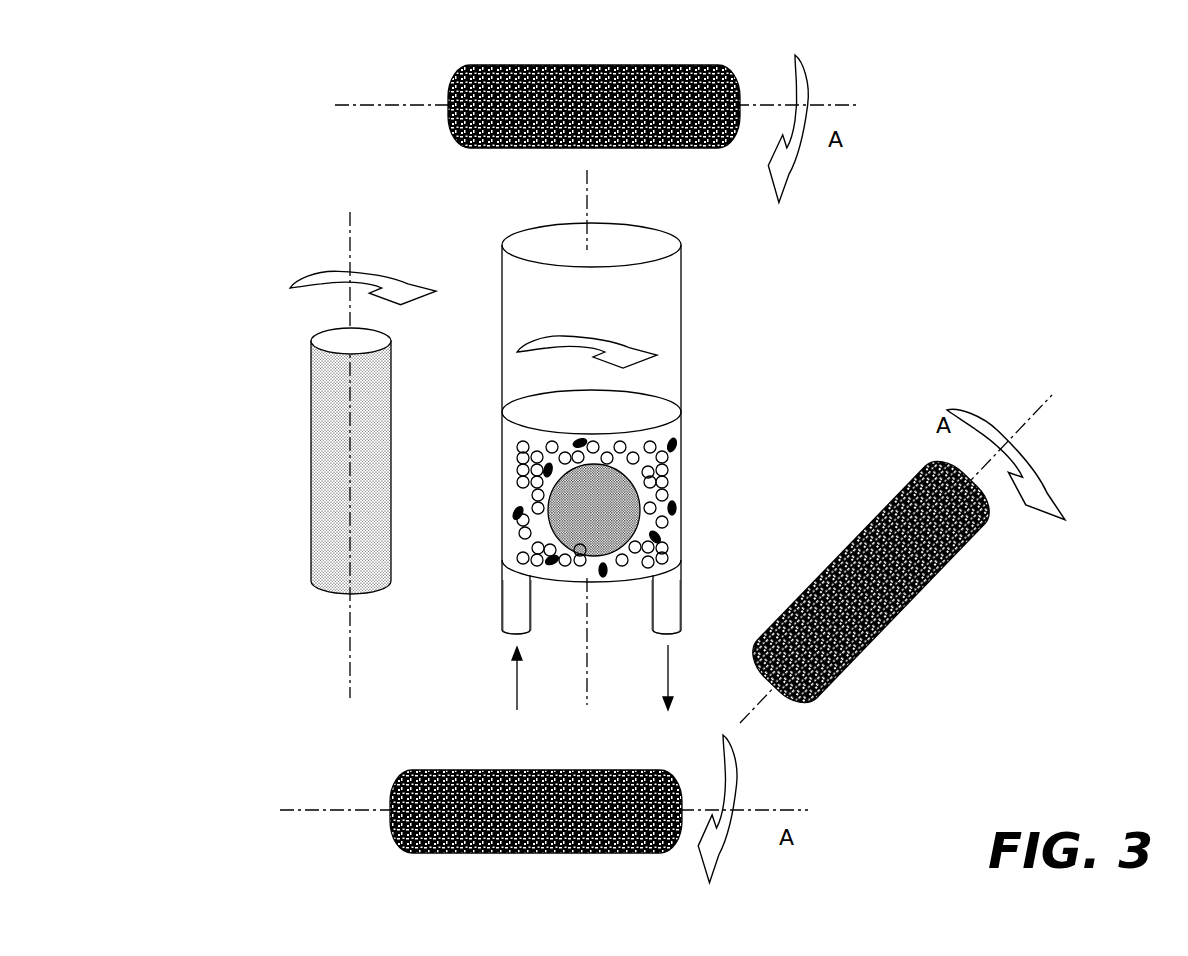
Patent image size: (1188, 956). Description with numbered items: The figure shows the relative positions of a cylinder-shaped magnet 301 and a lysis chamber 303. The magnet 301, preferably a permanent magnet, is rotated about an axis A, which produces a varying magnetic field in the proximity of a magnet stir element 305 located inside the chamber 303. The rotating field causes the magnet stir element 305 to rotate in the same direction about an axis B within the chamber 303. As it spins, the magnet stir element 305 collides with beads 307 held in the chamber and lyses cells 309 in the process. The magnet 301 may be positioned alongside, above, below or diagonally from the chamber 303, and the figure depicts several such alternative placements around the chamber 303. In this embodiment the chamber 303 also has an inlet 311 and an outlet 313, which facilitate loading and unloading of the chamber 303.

The magnet 301 is at (309, 553).
The lysis chamber 303 is at (665, 317).
The magnet stir element 305 is at (610, 520).
The beads 307 is at (657, 478).
The cells 309 is at (670, 432).
The inlet 311 is at (517, 602).
The outlet 313 is at (668, 602).